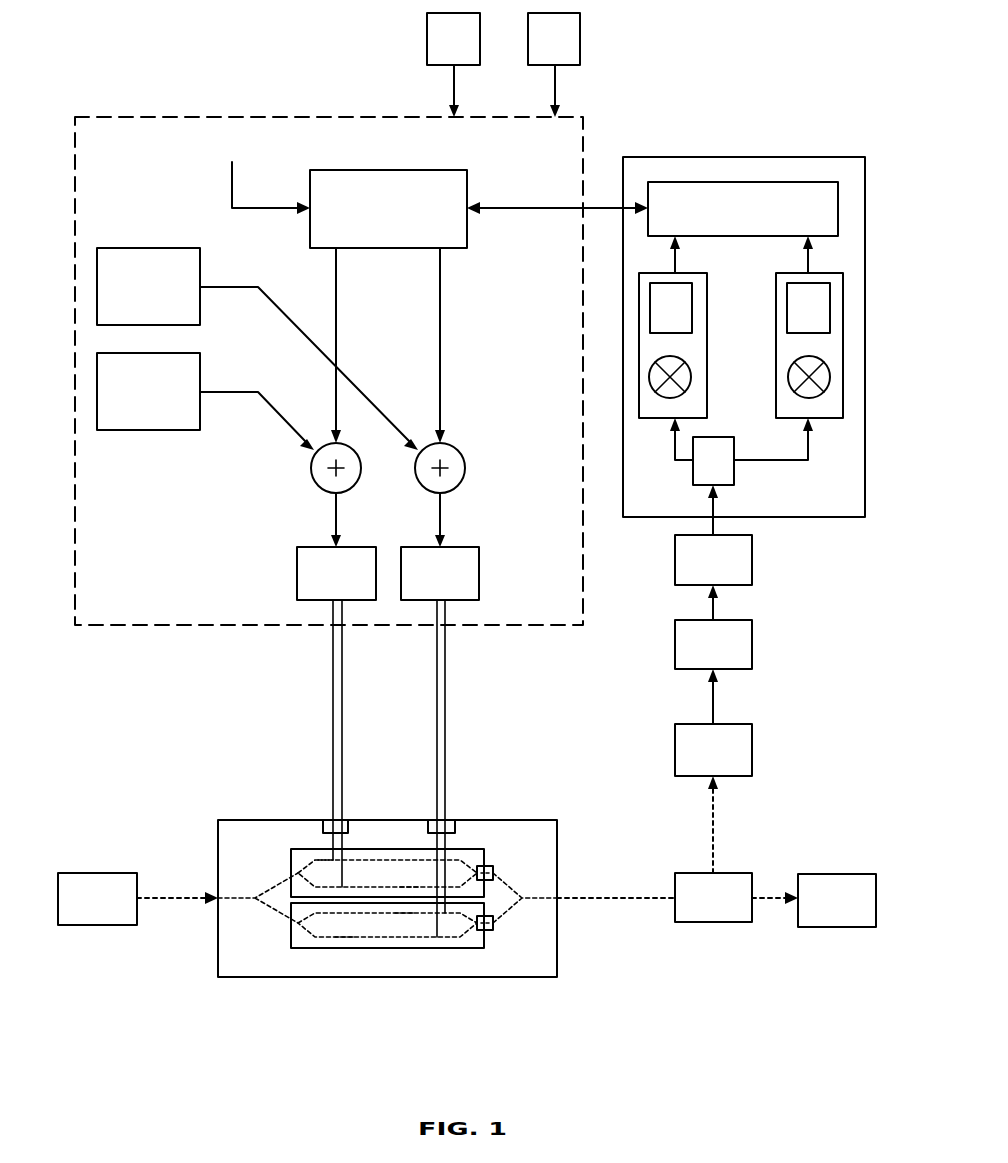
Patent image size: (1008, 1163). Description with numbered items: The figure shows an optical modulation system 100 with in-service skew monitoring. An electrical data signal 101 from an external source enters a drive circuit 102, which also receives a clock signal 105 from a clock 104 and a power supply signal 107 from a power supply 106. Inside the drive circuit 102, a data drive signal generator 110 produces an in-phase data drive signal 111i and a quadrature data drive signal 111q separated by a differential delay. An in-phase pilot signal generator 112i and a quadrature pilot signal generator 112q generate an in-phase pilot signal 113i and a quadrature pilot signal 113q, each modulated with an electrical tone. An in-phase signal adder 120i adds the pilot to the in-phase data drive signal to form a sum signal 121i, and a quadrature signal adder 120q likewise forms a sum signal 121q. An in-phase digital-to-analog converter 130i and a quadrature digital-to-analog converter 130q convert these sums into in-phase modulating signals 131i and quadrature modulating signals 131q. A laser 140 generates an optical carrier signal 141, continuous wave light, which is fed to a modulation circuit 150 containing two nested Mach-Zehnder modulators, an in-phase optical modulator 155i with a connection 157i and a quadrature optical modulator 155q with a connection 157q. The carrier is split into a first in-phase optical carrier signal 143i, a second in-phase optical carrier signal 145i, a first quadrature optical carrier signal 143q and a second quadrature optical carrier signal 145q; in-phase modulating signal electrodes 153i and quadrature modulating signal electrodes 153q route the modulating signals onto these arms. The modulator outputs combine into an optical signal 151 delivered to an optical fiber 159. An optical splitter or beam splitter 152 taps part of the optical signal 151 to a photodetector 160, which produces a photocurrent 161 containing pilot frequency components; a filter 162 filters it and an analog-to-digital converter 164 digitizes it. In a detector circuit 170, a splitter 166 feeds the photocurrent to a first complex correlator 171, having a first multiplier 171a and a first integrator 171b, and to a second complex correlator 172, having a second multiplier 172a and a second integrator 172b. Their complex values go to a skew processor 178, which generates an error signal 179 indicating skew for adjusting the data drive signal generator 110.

The optical modulation system 100 is at (703, 84).
The data signal 101 is at (232, 183).
The drive circuit 102 is at (240, 117).
The clock 104 is at (453, 39).
The clock signal 105 is at (454, 84).
The power supply 106 is at (554, 39).
The power supply signal 107 is at (555, 84).
The data drive signal generator 110 is at (405, 170).
The in-phase data drive signal 111i is at (338, 280).
The quadrature data drive signal 111q is at (442, 280).
The in-phase pilot signal generator 112i is at (170, 430).
The quadrature pilot signal generator 112q is at (166, 248).
The in-phase pilot signal 113i is at (222, 392).
The quadrature pilot signal 113q is at (222, 287).
The in-phase signal adder 120i is at (311, 468).
The quadrature signal adder 120q is at (466, 468).
The sum signal 121i is at (335, 516).
The sum signal 121q is at (442, 515).
The in-phase digital-to-analog converter 130i is at (297, 578).
The quadrature digital-to-analog converter 130q is at (481, 578).
The in-phase modulating signals 131i is at (333, 692).
The quadrature modulating signals 131q is at (440, 692).
The laser 140 is at (112, 873).
The optical carrier signal 141 is at (195, 898).
The first in-phase optical carrier signal 143i is at (320, 859).
The first quadrature optical carrier signal 143q is at (345, 938).
The second in-phase optical carrier signal 145i is at (415, 886).
The second quadrature optical carrier signal 145q is at (405, 914).
The modulation circuit 150 is at (558, 961).
The optical signal 151 is at (610, 898).
The optical splitter or beam splitter 152 is at (730, 873).
The in-phase modulating signal electrodes 153i is at (328, 820).
The quadrature modulating signal electrodes 153q is at (433, 820).
The in-phase optical modulator 155i is at (291, 862).
The quadrature optical modulator 155q is at (291, 935).
The connection 157i is at (493, 867).
The connection 157q is at (493, 930).
The optical fiber 159 is at (820, 874).
The photodetector 160 is at (675, 757).
The photocurrent 161 is at (713, 702).
The filter 162 is at (753, 643).
The analog-to-digital converter 164 is at (753, 559).
The splitter 166 is at (735, 479).
The detector circuit 170 is at (758, 157).
The first complex correlator 171 is at (680, 273).
The first multiplier 171a is at (691, 367).
The first integrator 171b is at (692, 297).
The second complex correlator 172 is at (795, 273).
The second multiplier 172a is at (787, 386).
The second integrator 172b is at (787, 322).
The skew processor 178 is at (743, 209).
The error signal 179 is at (508, 208).